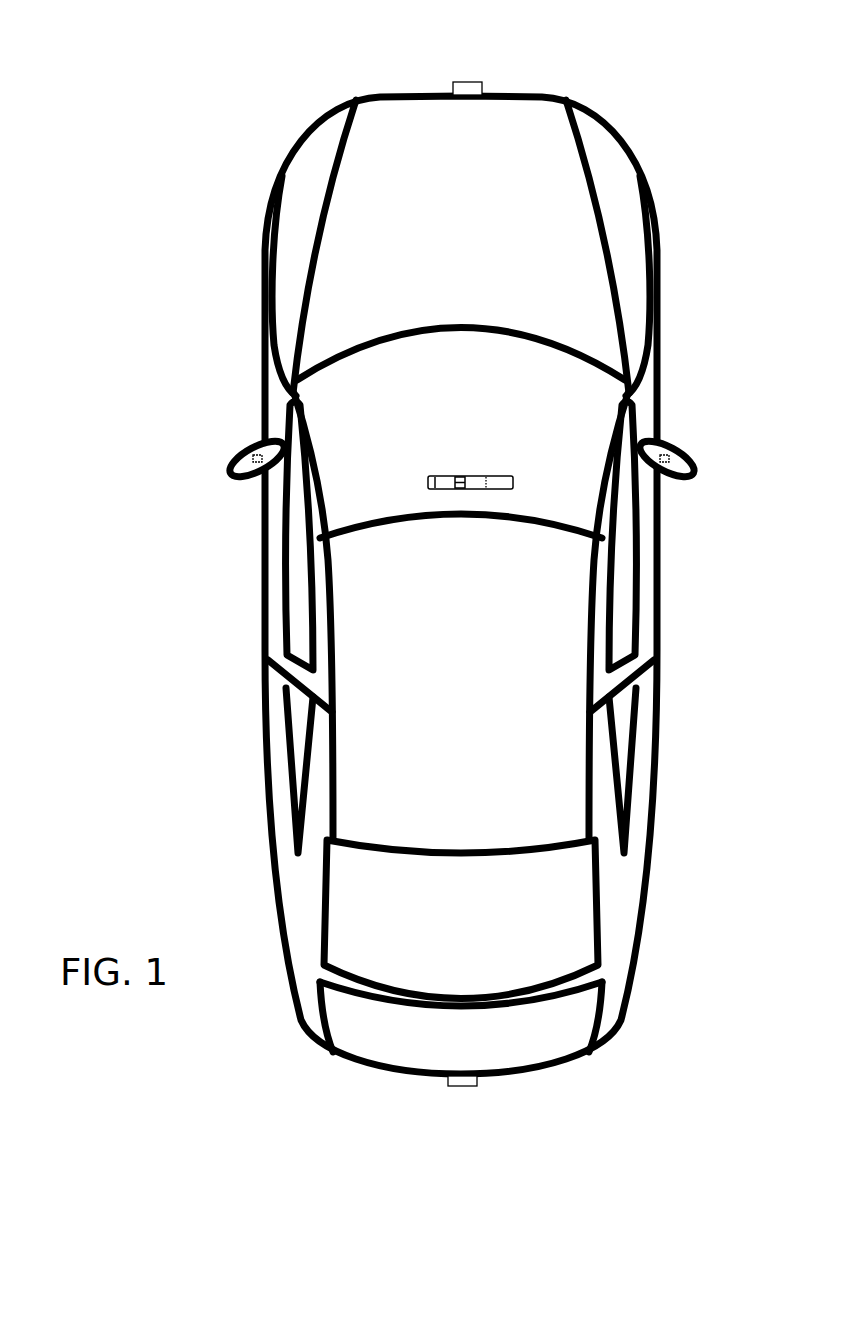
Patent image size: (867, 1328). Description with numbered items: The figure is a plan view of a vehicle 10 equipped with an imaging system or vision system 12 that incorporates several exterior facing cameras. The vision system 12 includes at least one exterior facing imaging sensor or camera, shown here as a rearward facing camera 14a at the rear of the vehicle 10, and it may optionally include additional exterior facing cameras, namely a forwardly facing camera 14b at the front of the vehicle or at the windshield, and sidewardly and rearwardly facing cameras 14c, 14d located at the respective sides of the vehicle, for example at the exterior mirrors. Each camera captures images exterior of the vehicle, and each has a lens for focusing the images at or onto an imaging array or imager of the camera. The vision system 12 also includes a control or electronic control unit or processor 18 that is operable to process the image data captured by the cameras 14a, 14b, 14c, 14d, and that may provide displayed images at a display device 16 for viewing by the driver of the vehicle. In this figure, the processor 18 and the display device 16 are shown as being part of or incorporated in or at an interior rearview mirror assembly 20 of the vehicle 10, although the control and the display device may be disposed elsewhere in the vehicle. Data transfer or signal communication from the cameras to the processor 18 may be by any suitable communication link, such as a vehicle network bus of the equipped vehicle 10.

The vehicle 10 is at (206, 182).
The vision system 12 is at (404, 1111).
The rearward facing camera 14a is at (465, 1086).
The forwardly facing camera 14b is at (470, 82).
The sidewardly/rearwardly facing camera 14c is at (247, 455).
The sidewardly/rearwardly facing camera 14d is at (666, 462).
The display device 16 is at (443, 476).
The electronic control unit 18 is at (466, 476).
The interior rearview mirror assembly 20 is at (513, 477).